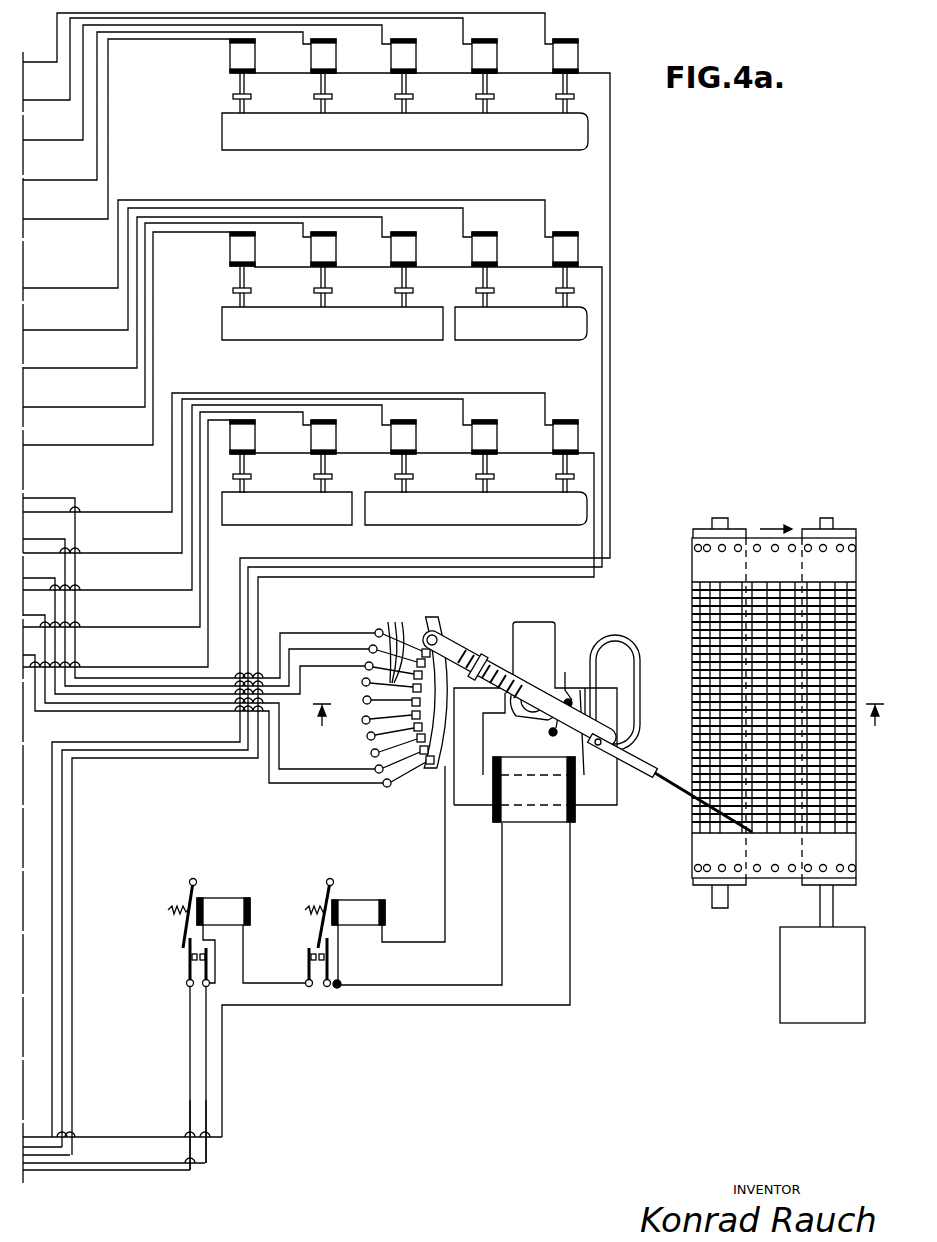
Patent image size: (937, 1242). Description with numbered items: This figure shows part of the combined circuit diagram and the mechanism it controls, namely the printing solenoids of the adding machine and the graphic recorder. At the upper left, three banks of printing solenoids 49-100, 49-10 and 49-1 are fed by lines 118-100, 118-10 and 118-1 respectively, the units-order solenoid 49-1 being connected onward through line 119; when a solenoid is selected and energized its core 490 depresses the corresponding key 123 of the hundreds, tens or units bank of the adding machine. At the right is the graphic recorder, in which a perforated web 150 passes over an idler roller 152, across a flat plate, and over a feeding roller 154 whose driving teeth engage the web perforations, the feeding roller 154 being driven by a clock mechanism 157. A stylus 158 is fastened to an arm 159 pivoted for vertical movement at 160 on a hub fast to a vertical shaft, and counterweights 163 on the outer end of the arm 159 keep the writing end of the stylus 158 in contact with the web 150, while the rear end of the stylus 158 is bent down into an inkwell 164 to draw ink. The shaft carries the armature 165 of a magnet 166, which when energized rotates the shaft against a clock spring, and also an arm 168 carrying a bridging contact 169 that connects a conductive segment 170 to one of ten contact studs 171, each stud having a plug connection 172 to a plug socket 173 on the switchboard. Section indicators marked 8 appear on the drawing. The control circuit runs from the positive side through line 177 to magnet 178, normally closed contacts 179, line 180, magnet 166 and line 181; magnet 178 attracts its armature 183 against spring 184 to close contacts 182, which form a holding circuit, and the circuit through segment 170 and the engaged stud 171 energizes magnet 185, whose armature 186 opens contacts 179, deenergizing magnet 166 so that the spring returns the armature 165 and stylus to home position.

The line 119 is at (62, 219).
The printing solenoid 49-100 is at (395, 58).
The printing solenoid 49-10 is at (398, 248).
The printing control solenoid 49-1 is at (398, 437).
The core 490 is at (238, 82).
The key 123 is at (232, 98).
The line 118-100 is at (78, 1055).
The line 118-10 is at (603, 299).
The line 118-1 is at (596, 497).
The plug socket 173 is at (371, 755).
The conductive segment 170 is at (433, 780).
The contact stud 171 is at (426, 766).
The plug connection 172 is at (394, 643).
The magnet 166 is at (530, 790).
The inkwell 164 is at (602, 650).
The pivot 160 is at (566, 690).
The arm 159 is at (584, 775).
The armature 165 is at (532, 722).
The arm 168 is at (584, 717).
The stylus 158 is at (690, 800).
The counterweights 163 is at (485, 660).
The bridging contact 169 is at (432, 635).
The section line 8 is at (598, 704).
The web 150 is at (745, 700).
The idler roller 152 is at (697, 885).
The feeding roller 154 is at (803, 886).
The clock mechanism 157 is at (800, 972).
The magnet 178 is at (232, 898).
The armature 183 is at (163, 904).
The spring 184 is at (168, 910).
The contacts 182 is at (195, 963).
The magnet 185 is at (366, 902).
The armature 186 is at (303, 913).
The normally closed contacts 179 is at (316, 962).
The line 180 is at (380, 985).
The line 181 is at (340, 1005).
The line 177 is at (184, 1112).